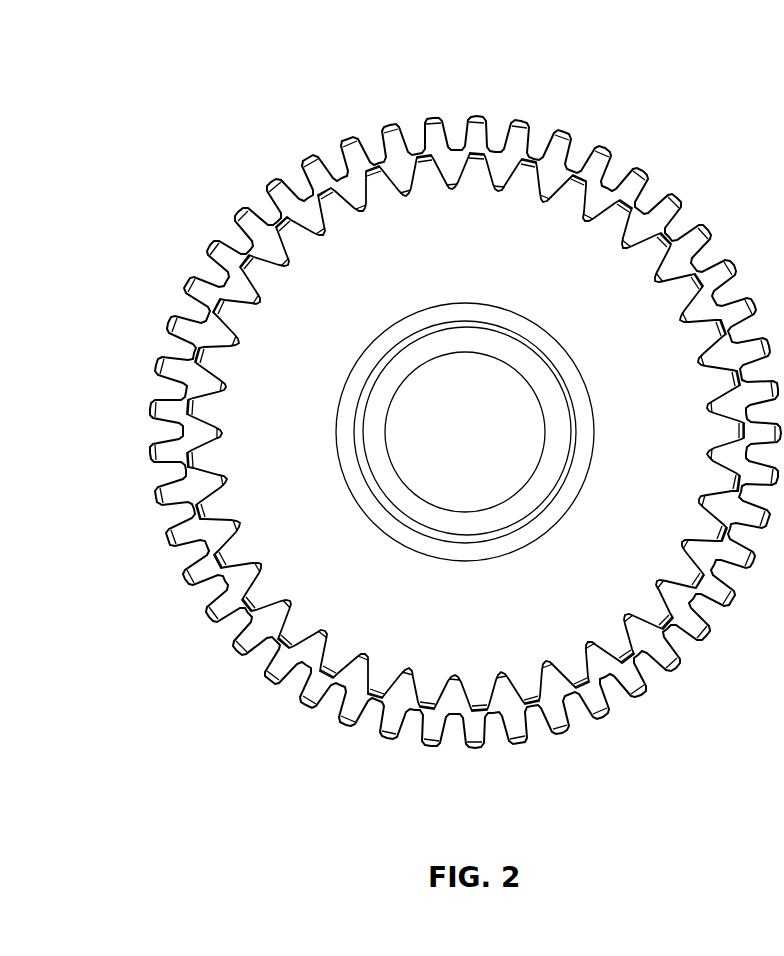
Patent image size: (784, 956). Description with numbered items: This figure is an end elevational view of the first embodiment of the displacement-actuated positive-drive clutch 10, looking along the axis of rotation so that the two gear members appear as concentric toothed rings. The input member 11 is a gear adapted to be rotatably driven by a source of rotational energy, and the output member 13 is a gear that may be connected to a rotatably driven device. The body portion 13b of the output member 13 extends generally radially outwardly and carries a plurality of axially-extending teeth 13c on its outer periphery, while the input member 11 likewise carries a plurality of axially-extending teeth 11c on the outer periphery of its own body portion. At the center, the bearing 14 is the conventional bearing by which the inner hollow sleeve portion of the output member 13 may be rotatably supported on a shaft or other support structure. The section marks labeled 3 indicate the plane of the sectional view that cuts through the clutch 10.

The displacement-actuated positive-drive clutch 10 is at (439, 437).
The input member 11 is at (581, 126).
The output member 13 is at (692, 219).
The axially-extending teeth 13c is at (190, 400).
The axially-extending teeth 11c is at (242, 637).
The bearing 14 is at (538, 485).
The body portion 13b is at (472, 633).
The section line 3- 3 is at (477, 116).